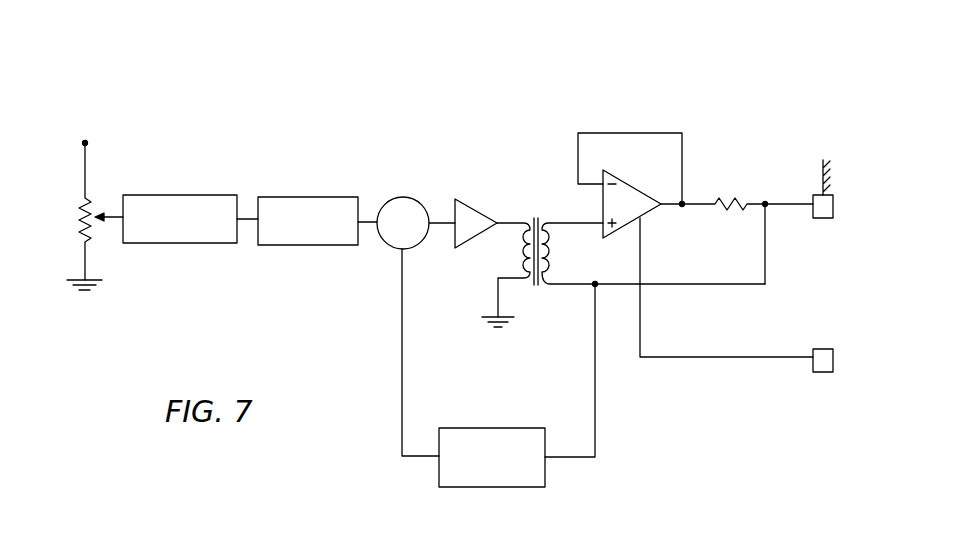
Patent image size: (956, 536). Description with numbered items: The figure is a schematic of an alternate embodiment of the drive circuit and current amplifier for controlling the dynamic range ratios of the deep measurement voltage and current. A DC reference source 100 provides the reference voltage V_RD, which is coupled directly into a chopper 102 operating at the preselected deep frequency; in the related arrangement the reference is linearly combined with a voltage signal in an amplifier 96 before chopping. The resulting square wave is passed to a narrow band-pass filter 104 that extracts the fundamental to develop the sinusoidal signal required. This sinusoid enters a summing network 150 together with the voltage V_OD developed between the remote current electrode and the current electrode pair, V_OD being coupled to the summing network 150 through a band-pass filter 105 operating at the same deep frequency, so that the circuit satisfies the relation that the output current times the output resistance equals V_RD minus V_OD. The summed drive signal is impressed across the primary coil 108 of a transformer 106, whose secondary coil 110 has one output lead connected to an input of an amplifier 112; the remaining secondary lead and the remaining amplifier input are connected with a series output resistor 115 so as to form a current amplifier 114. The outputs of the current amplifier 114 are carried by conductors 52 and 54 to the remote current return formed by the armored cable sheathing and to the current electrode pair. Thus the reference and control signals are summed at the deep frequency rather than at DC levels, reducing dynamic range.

The DC reference voltage source 100 is at (127, 160).
The chopper 102 is at (175, 245).
The narrow band-pass filter 104 is at (302, 195).
The summing network 150 is at (412, 196).
The amplifier 96 is at (478, 207).
The transformer 106 is at (536, 213).
The primary coil 108 is at (512, 252).
The secondary coil 110 is at (557, 275).
The amplifier 112 is at (628, 188).
The current amplifier 114 is at (665, 123).
The series output resistor 115 is at (725, 215).
The conductor 52 is at (797, 208).
The conductor 54 is at (697, 358).
The filter f1 105 is at (438, 475).